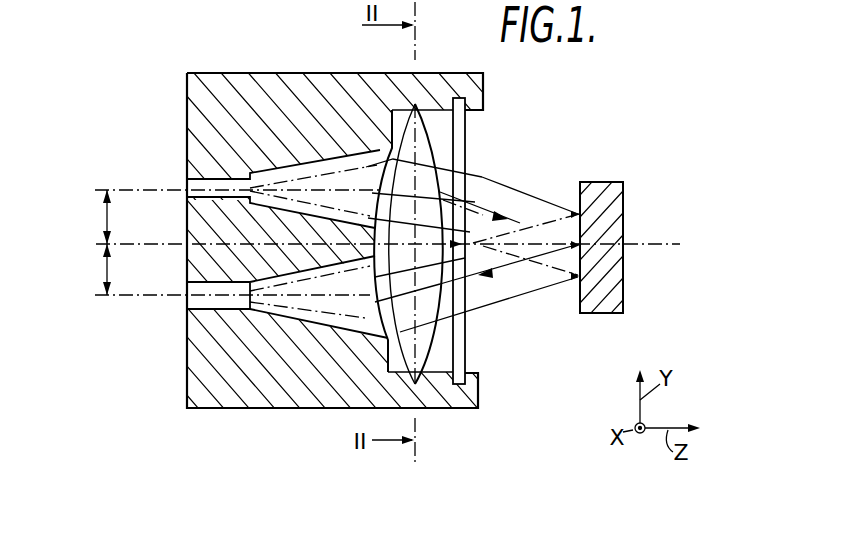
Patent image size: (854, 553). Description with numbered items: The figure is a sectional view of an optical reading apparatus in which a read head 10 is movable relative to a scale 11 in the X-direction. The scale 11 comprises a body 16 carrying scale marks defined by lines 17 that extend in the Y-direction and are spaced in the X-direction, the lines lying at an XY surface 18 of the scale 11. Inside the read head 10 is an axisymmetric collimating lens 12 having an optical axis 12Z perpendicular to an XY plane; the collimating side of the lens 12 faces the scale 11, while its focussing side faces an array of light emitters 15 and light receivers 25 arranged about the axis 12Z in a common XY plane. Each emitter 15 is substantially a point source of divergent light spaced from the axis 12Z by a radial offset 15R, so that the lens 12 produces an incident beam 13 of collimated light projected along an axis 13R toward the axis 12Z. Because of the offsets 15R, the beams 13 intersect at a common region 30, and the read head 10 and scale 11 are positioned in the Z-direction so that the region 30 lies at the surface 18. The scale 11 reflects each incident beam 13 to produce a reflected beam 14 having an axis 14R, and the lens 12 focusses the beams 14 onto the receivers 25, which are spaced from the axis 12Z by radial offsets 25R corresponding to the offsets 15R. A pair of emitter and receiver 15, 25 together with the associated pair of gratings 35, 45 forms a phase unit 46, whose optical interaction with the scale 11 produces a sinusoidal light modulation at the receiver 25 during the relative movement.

The read head 10 is at (313, 72).
The scale 11 is at (613, 181).
The collimating lens 12 is at (454, 98).
The optical axis 12Z is at (642, 244).
The incident beam 13 is at (508, 186).
The axis of incident beam 13R is at (543, 207).
The reflected beam 14 is at (506, 300).
The axis of reflected beam 14R is at (498, 305).
The light emitter 15 is at (188, 176).
The radial offset of emitter 15R is at (88, 217).
The scale body 16 is at (625, 291).
The scale lines 17 is at (578, 220).
The XY surface of scale 18 is at (597, 313).
The light receiver 25 is at (188, 299).
The radial offset of receiver 25R is at (85, 269).
The common region 30 is at (578, 278).
The grating 35 is at (470, 181).
The grating 45 is at (462, 300).
The phase unit 46 is at (215, 172).